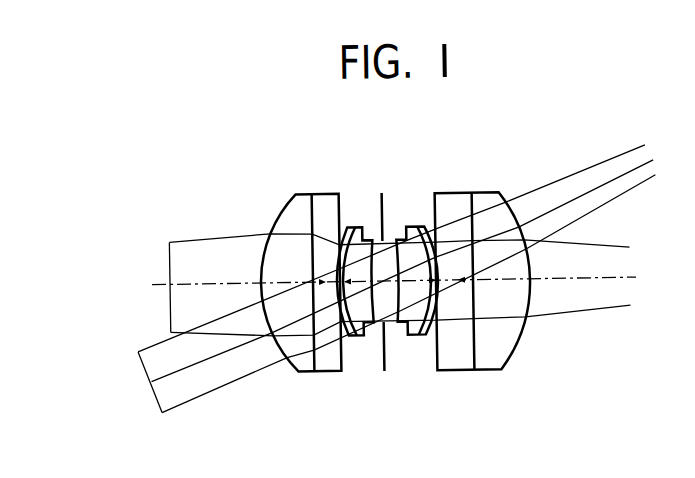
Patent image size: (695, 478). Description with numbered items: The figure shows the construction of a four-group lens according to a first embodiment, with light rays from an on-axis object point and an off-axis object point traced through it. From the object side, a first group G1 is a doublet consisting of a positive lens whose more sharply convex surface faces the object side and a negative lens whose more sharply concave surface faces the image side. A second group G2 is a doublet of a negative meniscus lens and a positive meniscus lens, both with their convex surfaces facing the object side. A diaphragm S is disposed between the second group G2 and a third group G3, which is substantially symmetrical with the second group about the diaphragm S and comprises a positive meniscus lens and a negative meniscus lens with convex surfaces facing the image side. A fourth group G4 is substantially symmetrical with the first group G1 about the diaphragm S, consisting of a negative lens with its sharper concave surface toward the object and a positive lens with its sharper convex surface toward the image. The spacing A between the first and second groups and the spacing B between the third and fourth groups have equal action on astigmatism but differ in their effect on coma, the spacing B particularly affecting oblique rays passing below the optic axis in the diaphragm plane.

The first group G1 is at (343, 165).
The second group G2 is at (378, 191).
The third group G3 is at (427, 191).
The fourth group G4 is at (517, 167).
The diaphragm S is at (383, 191).
The spacing between the first and second groups A is at (334, 279).
The spacing between the third and fourth groups B is at (449, 279).